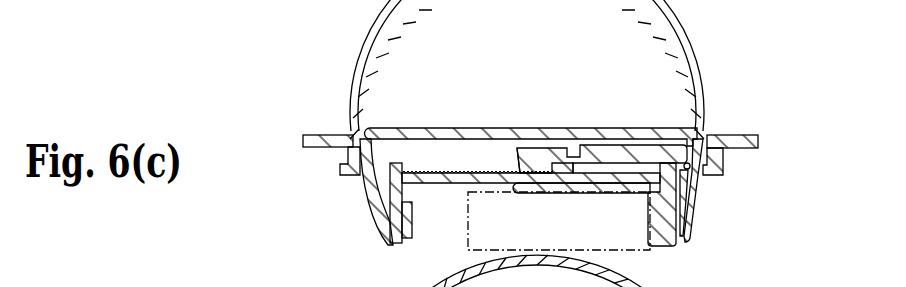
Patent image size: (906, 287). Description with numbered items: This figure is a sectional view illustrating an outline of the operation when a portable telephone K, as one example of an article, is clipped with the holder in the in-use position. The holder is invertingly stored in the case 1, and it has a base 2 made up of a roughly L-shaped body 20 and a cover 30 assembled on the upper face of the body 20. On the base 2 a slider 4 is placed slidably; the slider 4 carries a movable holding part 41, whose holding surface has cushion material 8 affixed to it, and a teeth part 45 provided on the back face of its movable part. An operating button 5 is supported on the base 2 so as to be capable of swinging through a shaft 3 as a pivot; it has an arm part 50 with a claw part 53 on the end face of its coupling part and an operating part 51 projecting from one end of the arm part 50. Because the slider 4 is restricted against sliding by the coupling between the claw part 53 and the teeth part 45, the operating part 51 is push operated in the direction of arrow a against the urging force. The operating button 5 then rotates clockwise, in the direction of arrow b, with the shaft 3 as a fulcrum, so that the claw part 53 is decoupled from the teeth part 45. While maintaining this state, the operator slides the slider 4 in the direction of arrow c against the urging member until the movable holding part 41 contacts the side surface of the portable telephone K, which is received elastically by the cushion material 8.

The case 1 is at (693, 67).
The base 2 is at (530, 188).
The body 20 is at (538, 143).
The cover 30 is at (383, 128).
The slider 4 is at (341, 193).
The movable holding part 41 is at (373, 217).
The teeth part 45 is at (436, 173).
The arm part 50 is at (609, 146).
The claw part 53 is at (517, 150).
The operating button 5 is at (741, 208).
The operating part 51 is at (690, 213).
The shaft 3 is at (692, 165).
The cushion material 8 is at (412, 235).
The portable telephone K is at (621, 243).
The direction of arrow a is at (699, 188).
The direction of arrow b is at (542, 148).
The direction of arrow c is at (368, 200).